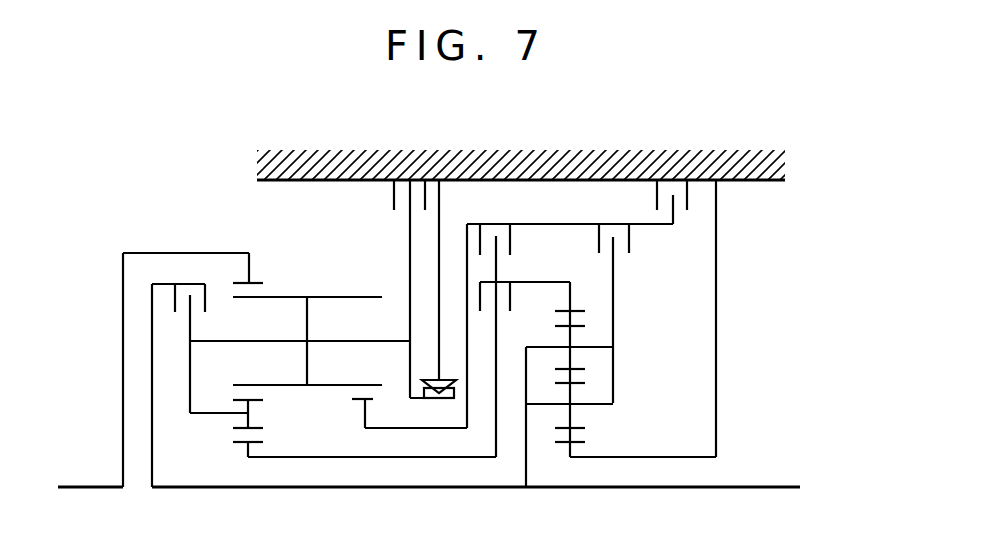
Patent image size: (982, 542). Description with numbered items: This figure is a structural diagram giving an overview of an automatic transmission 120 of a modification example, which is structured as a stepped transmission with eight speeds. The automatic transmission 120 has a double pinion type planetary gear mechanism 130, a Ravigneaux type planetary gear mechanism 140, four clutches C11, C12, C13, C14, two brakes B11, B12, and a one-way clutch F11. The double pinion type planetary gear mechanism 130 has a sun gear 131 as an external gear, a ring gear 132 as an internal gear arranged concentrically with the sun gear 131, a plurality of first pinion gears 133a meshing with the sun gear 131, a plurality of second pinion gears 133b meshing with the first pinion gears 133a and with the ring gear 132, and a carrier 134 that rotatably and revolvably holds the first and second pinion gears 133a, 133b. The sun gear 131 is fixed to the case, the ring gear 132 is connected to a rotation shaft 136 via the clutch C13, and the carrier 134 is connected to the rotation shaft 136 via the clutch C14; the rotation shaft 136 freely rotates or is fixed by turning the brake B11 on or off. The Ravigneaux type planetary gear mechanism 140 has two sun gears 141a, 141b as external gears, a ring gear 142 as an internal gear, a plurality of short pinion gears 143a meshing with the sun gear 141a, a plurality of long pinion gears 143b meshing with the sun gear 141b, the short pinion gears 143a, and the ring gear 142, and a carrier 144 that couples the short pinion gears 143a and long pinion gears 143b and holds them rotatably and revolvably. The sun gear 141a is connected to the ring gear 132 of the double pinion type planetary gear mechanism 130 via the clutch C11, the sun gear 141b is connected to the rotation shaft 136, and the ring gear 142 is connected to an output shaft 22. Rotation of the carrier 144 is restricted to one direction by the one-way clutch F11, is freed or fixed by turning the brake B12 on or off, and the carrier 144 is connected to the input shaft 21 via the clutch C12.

The automatic transmission 120 is at (800, 196).
The brake B12 is at (393, 198).
The brake B11 is at (656, 200).
The Ravigneaux type planetary gear mechanism 140 is at (266, 238).
The ring gear 142 is at (263, 283).
The long pinion gears 143b is at (296, 297).
The clutch C12 is at (197, 283).
The carrier 144 is at (191, 362).
The sun gear 141b is at (354, 399).
The one-way clutch F11 is at (440, 399).
The short pinion gears 143a is at (247, 441).
The sun gear 141a is at (247, 449).
The output shaft 22 is at (108, 486).
The input shaft 21 is at (754, 486).
The rotation shaft 136 is at (582, 223).
The clutch C13 is at (510, 223).
The clutch C14 is at (629, 237).
The clutch C11 is at (507, 282).
The double pinion type planetary gear mechanism 130 is at (636, 311).
The ring gear 132 is at (560, 311).
The second pinion gears 133b is at (575, 336).
The carrier 134 is at (615, 378).
The first pinion gears 133a is at (573, 415).
The sun gear 131 is at (577, 446).